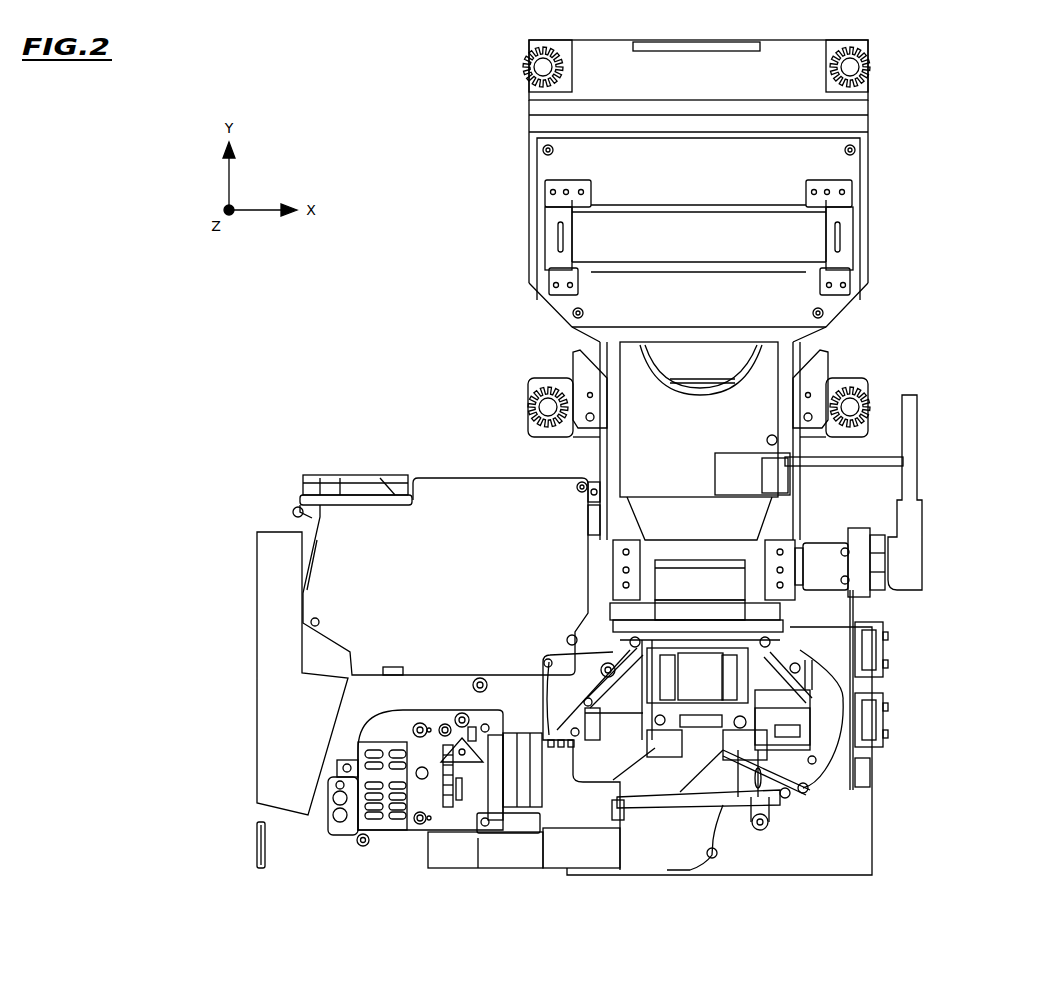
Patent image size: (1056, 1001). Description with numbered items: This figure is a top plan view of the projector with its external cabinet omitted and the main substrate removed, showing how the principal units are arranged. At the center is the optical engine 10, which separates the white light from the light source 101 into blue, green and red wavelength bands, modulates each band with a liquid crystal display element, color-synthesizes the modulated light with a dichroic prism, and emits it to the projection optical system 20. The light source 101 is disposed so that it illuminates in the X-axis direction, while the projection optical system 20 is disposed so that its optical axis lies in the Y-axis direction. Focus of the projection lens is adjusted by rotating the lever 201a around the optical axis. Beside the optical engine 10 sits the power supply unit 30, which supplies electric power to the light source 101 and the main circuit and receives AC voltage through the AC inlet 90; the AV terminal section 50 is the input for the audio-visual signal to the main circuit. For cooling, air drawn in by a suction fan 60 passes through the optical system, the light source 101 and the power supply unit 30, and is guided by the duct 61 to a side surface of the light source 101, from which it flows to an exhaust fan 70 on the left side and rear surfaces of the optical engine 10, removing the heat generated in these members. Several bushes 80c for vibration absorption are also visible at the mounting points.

The optical engine 10 is at (530, 747).
The projection optical system 20 is at (787, 287).
The power supply unit 30 is at (470, 493).
The AV terminal section 50 is at (893, 663).
The suction fan 60 is at (575, 687).
The duct 61 is at (497, 850).
The exhaust fan 70 is at (324, 472).
The bush for vibration absorption 80c is at (523, 70).
The AC inlet 90 is at (825, 553).
The light source 101 is at (420, 824).
The lever 201a is at (870, 458).